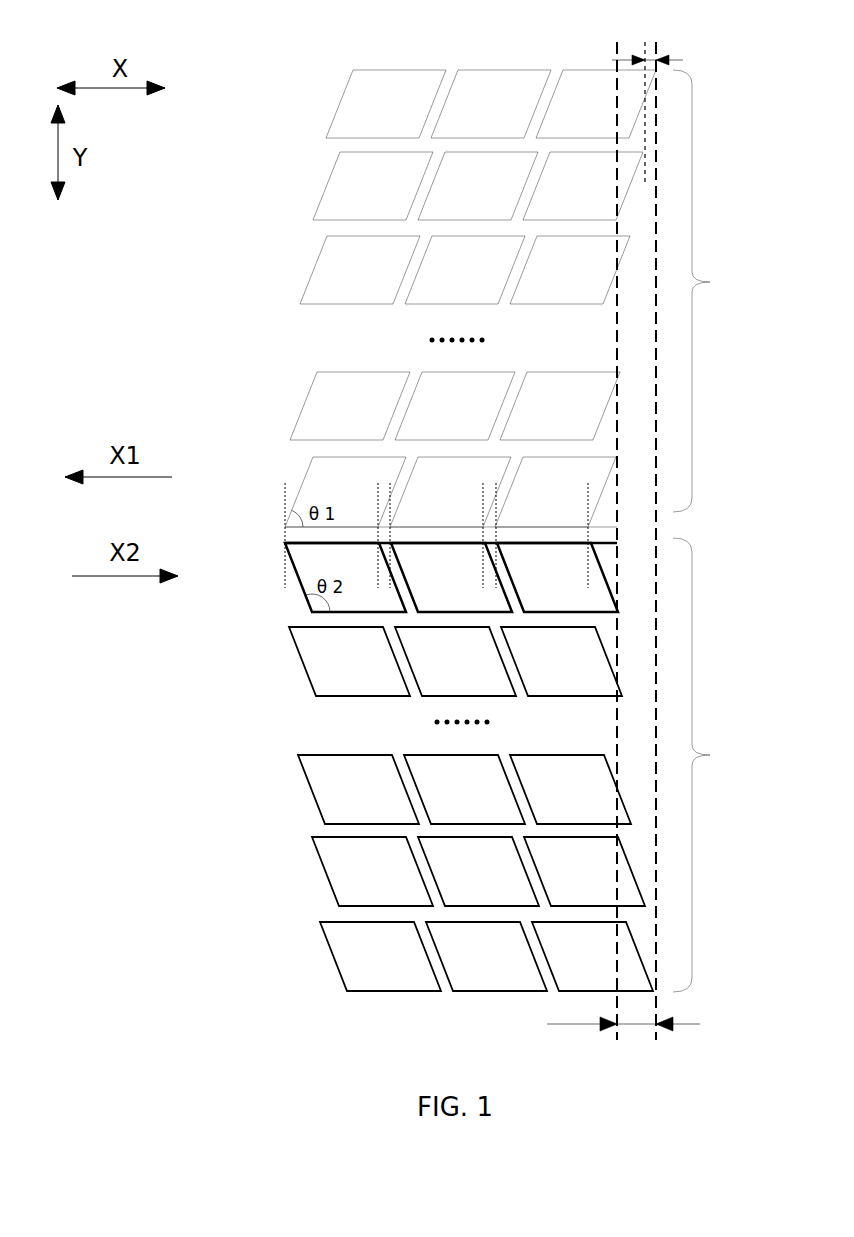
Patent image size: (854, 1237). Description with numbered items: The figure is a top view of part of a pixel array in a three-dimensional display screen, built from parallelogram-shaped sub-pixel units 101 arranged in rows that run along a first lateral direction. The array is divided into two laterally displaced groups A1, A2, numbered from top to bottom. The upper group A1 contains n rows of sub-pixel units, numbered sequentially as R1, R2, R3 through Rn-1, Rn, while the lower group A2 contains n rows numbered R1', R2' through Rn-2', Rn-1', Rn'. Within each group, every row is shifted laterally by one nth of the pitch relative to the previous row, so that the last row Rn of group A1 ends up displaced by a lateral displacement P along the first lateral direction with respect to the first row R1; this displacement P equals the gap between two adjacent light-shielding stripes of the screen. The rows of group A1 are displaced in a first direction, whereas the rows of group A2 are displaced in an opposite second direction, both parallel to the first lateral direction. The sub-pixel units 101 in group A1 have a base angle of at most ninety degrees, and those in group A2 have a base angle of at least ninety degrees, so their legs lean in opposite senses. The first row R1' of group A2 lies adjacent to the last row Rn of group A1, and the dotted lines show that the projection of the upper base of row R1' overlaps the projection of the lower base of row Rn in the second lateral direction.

The sub-pixel unit 101 is at (390, 88).
The first sub-pixel unit row R1 is at (458, 90).
The second sub-pixel unit row R2 is at (455, 186).
The third sub-pixel unit row R3 is at (439, 270).
The (n-1)th sub-pixel unit row Rn-1 is at (423, 406).
The nth sub-pixel unit row Rn is at (411, 492).
The first sub-pixel unit row of the second group R1' is at (414, 577).
The second sub-pixel unit row of the second group R2' is at (421, 661).
The (n-2)th sub-pixel unit row of the second group Rn-2' is at (429, 789).
The (n-1)th sub-pixel unit row of the second group Rn-1' is at (445, 871).
The nth sub-pixel unit row of the second group Rn' is at (459, 956).
The first laterally displaced group A1 is at (716, 291).
The second laterally displaced group A2 is at (716, 765).
The lateral displacement P is at (623, 1041).